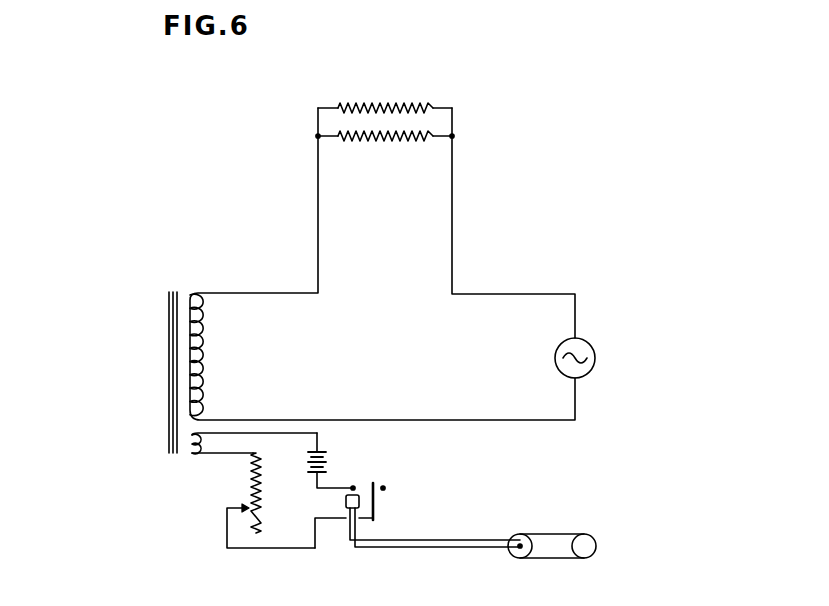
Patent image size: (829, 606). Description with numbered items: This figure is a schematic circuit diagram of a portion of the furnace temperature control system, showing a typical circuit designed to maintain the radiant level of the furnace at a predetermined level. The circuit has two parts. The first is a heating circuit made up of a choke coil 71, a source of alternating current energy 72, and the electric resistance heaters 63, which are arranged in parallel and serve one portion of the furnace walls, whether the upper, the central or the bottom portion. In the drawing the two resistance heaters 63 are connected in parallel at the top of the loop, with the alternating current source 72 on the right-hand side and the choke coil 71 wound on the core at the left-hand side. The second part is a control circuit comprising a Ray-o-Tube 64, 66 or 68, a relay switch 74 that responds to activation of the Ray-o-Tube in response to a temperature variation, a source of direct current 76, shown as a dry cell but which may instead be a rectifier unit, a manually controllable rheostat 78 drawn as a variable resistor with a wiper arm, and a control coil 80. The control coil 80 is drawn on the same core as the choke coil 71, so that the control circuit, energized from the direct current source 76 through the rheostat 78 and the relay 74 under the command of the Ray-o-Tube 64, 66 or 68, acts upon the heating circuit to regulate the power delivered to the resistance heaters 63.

The electric resistance heaters 63 is at (394, 104).
The choke coil 71 is at (203, 353).
The source of alternating current energy 72 is at (596, 358).
The control coil 80 is at (188, 458).
The manually controllable rheostat 78 is at (247, 488).
The source of direct current 76 is at (321, 467).
The relay switch 74 is at (378, 495).
The Ray-o-Tube 64 is at (614, 537).
The Ray-o-Tube 66 is at (614, 537).
The Ray-o-Tube 68 is at (610, 546).